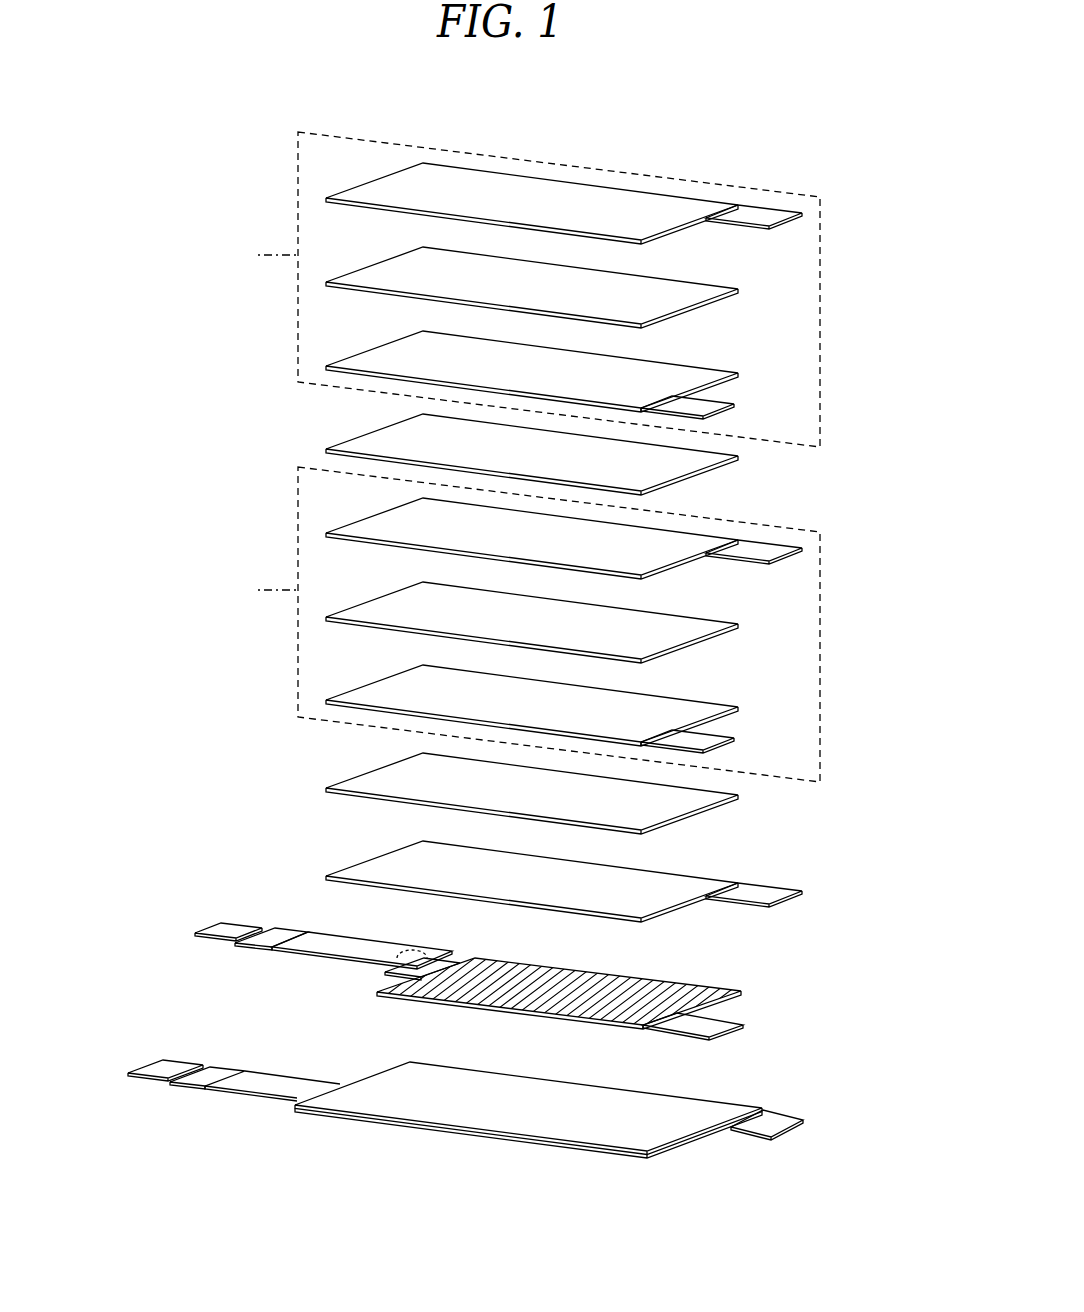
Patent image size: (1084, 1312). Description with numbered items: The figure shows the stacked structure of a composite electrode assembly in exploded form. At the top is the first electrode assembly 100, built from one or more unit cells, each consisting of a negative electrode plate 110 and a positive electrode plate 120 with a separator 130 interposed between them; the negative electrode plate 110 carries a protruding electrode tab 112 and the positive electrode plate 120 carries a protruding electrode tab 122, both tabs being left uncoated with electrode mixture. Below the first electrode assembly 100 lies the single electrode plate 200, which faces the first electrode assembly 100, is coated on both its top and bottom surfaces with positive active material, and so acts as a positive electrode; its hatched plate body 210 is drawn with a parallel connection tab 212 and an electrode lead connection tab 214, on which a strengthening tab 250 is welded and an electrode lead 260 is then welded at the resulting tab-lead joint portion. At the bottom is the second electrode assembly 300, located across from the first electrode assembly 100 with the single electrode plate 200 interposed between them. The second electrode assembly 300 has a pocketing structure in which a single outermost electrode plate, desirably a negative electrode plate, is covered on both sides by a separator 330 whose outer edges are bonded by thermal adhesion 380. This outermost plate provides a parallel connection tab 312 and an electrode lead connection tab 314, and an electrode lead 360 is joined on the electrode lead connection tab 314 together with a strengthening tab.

The first electrode assembly 100 is at (257, 132).
The negative electrode plate 110 is at (683, 222).
The electrode tab 112 is at (770, 208).
The positive electrode plate 120 is at (700, 365).
The electrode tab 122 is at (740, 408).
The separator 130 is at (693, 300).
The single electrode plate 200 is at (700, 973).
The first collector plate 210 is at (713, 996).
The parallel connection tab 212 is at (707, 1033).
The electrode lead connection tab 214 is at (450, 957).
The strengthening tab 250 is at (393, 967).
The electrode lead 260 is at (243, 927).
The second electrode assembly 300 is at (461, 1139).
The parallel connection tab 312 is at (790, 1128).
The electrode lead connection tab 314 is at (270, 1093).
The separator 330 is at (678, 1130).
The electrode lead 360 is at (158, 1072).
The thermal adhesion 380 is at (652, 1154).